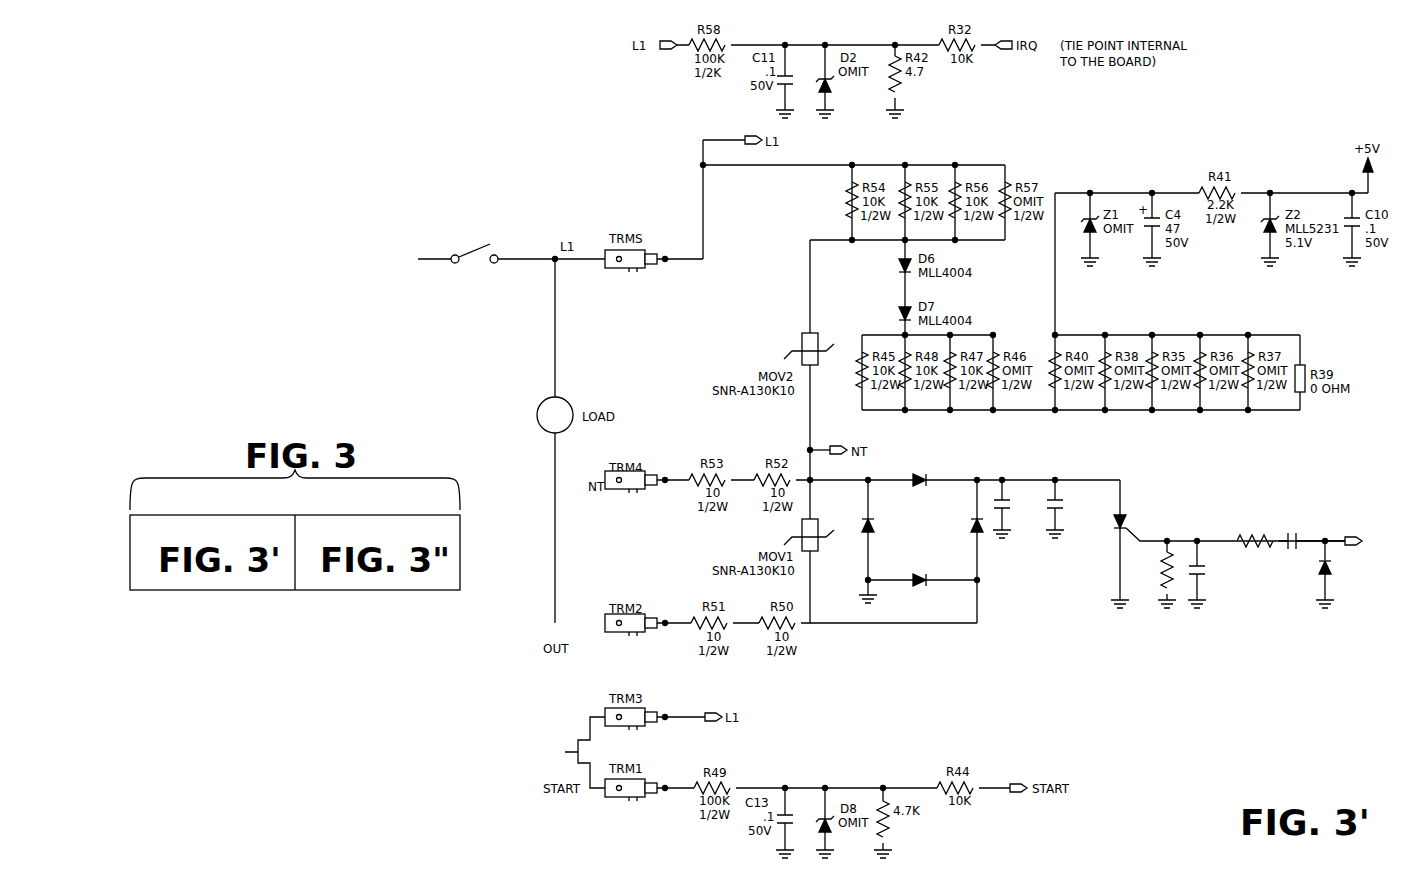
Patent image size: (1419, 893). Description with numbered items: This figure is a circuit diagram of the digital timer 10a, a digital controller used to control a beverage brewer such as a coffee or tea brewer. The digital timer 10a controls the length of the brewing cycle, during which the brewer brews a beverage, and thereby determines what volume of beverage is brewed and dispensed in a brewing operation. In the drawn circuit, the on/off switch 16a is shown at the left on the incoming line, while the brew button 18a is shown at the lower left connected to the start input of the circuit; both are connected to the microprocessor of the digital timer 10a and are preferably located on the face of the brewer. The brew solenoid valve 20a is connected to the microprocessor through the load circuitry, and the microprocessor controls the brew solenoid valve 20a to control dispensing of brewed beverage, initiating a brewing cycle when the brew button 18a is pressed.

The on/off switch 16a is at (453, 228).
The brew solenoid valve 20a is at (766, 340).
The brew button 18a is at (549, 740).
The digital timer 10a is at (1062, 661).